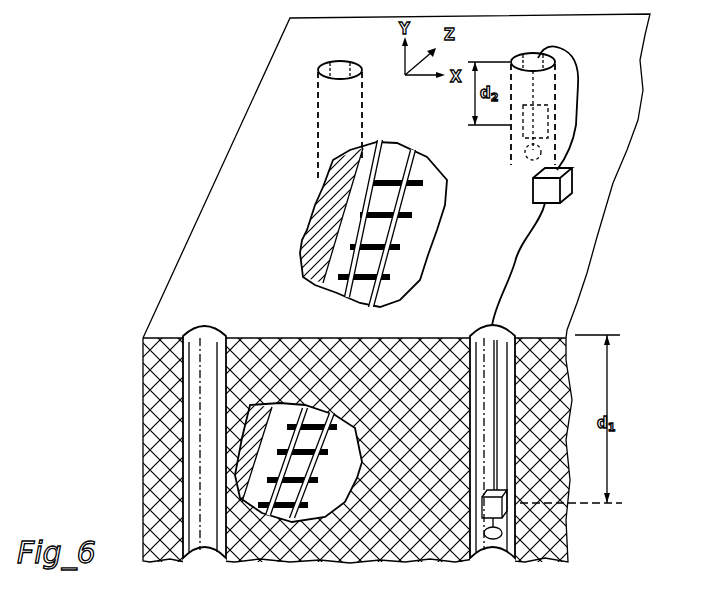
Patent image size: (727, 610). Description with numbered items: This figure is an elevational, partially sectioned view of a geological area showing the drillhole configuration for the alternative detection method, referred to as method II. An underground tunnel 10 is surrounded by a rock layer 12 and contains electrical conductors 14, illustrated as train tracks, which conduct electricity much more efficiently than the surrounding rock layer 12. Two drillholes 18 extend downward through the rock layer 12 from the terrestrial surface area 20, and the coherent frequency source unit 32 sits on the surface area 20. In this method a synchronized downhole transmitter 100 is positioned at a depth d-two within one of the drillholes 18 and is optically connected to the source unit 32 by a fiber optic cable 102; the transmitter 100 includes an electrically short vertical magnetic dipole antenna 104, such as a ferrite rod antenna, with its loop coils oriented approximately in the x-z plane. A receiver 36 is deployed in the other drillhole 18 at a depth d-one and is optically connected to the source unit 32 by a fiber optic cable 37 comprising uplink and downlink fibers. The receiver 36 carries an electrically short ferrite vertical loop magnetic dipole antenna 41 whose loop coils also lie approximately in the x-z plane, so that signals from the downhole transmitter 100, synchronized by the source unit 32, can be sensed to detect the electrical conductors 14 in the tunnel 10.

The underground tunnel 10 is at (405, 279).
The rock layer 12 is at (309, 236).
The electrical conductors 14 is at (384, 146).
The drillholes 18 is at (337, 58).
The terrestrial surface area 20 is at (213, 192).
The coherent frequency source unit 32 is at (530, 204).
The receiver 36 is at (482, 500).
The fiber optic cable 37 is at (515, 270).
The ferrite vertical loop magnetic dipole antenna 41 is at (493, 545).
The synchronized downhole transmitter 100 is at (521, 151).
The fiber optic cable 102 is at (580, 84).
The electrically short vertical magnetic dipole antenna 104 is at (532, 163).